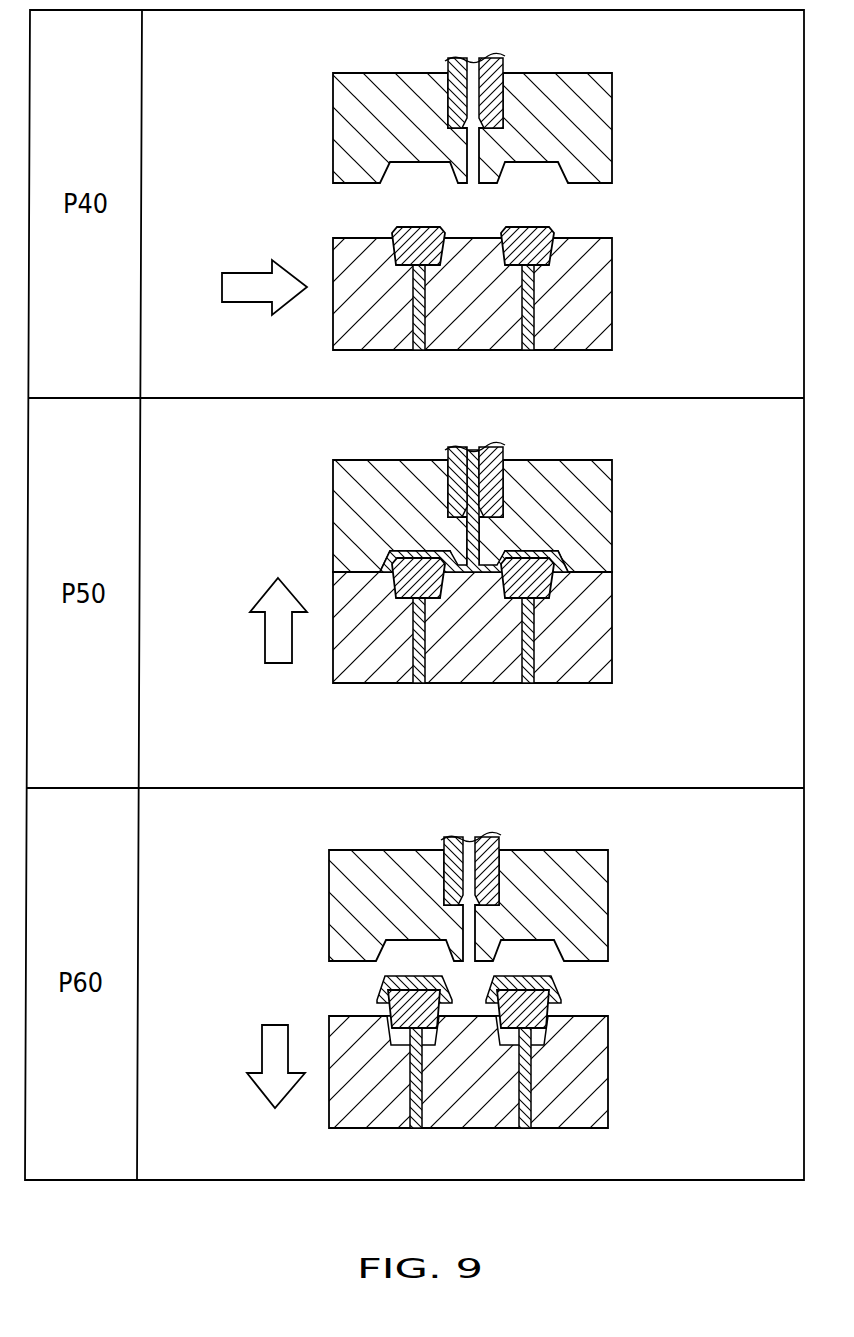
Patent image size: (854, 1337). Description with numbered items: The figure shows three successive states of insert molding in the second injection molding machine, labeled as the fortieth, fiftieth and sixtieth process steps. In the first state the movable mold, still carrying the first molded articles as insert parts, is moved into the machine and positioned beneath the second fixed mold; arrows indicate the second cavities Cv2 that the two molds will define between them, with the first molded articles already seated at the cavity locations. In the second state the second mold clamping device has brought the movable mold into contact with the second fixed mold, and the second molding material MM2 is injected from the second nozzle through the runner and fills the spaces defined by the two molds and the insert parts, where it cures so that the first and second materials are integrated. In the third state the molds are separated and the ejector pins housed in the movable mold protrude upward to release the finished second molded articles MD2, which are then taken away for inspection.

The second cavities Cv2 is at (547, 210).
The second molding material MM2 is at (482, 492).
The second molded articles MD2 is at (564, 985).